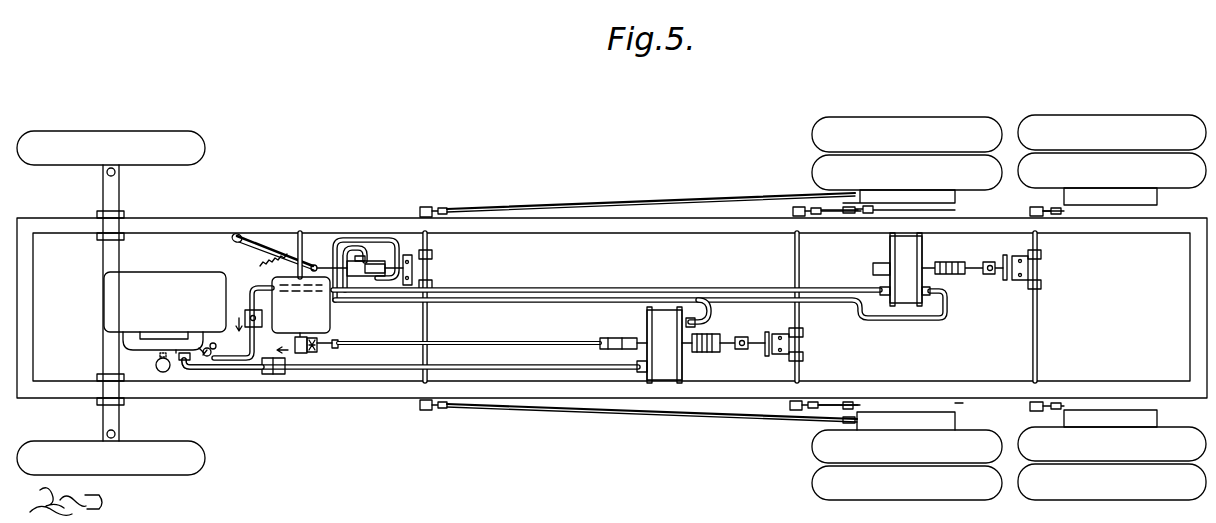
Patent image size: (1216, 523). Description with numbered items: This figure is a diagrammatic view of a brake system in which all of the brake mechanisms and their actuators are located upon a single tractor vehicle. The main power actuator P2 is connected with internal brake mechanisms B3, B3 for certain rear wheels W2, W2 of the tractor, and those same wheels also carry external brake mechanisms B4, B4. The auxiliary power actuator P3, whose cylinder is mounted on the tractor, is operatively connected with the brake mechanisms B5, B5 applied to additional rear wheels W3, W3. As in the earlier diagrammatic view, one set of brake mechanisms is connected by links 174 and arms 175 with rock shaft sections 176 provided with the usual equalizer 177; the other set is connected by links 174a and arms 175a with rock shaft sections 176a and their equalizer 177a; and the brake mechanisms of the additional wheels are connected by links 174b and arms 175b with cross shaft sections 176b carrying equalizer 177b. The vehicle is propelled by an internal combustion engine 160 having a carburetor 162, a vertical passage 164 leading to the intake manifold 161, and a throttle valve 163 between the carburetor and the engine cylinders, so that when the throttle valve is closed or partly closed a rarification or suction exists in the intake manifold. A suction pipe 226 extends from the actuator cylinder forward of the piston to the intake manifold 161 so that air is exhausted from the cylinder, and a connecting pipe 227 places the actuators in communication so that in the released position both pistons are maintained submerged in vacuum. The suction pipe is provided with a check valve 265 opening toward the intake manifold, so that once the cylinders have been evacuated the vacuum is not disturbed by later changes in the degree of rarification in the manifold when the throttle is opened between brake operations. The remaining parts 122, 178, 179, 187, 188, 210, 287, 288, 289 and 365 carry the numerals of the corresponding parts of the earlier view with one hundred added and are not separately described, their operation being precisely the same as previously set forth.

The internal combustion engine 160 is at (165, 302).
The intake manifold 161 is at (135, 346).
The carburetor 162 is at (160, 372).
The throttle valve 163 is at (156, 365).
The vertical passage 164 is at (170, 373).
The cable connection fitting 122 is at (636, 341).
The links 174 is at (840, 218).
The links 174a is at (622, 201).
The links 174b is at (1052, 218).
The arms 175 is at (798, 207).
The arms 175a is at (427, 207).
The arms 175b is at (1030, 211).
The rock shaft sections 176 is at (794, 271).
The rock shaft sections 176a is at (433, 254).
The cross shaft sections 176b is at (1042, 253).
The equalizer 177 is at (790, 340).
The equalizer 177a is at (413, 276).
The equalizer 177b is at (1040, 284).
The clevis 178 is at (742, 338).
The cross lever 179 is at (767, 332).
The cable 187 is at (534, 343).
The cable fitting 188 is at (310, 337).
The control valve 210 is at (362, 256).
The suction pipe 226 is at (474, 367).
The connecting pipe 227 is at (220, 346).
The check valve 265 is at (272, 376).
The pipe 287 is at (340, 240).
The hand lever 288 is at (252, 246).
The spring 289 is at (257, 264).
The valve 365 is at (245, 314).
The rear wheels W2 is at (920, 124).
The additional rear wheels W3 is at (1114, 124).
The internal brake mechanisms B3 is at (955, 207).
The external brake mechanisms B4 is at (893, 202).
The brake mechanisms B5 is at (1157, 200).
The main power actuator P2 is at (676, 369).
The auxiliary power actuator P3 is at (912, 249).